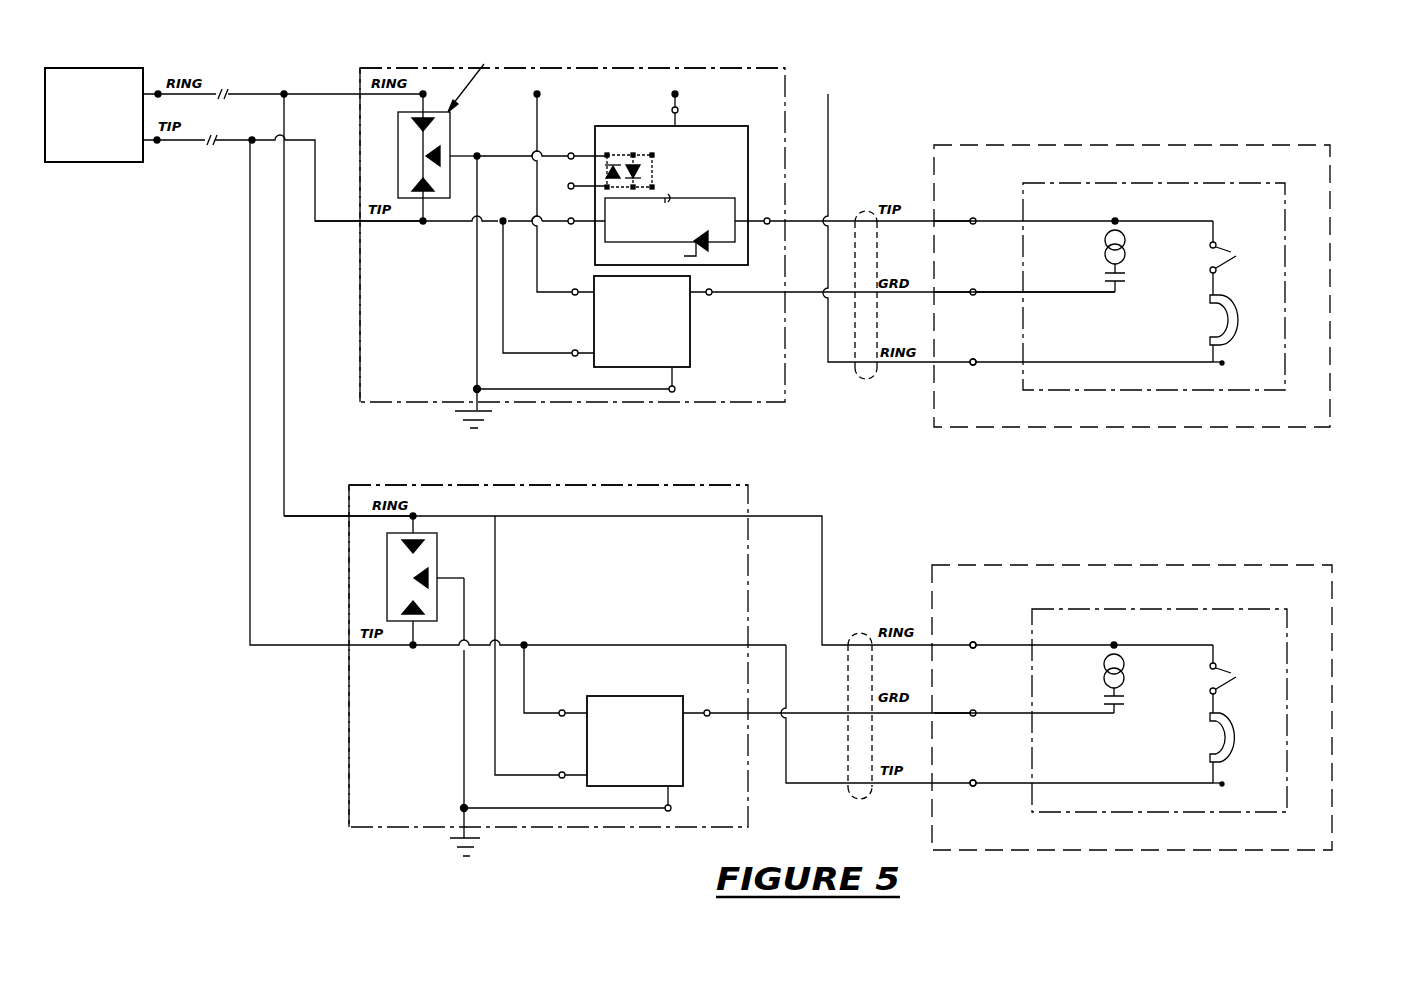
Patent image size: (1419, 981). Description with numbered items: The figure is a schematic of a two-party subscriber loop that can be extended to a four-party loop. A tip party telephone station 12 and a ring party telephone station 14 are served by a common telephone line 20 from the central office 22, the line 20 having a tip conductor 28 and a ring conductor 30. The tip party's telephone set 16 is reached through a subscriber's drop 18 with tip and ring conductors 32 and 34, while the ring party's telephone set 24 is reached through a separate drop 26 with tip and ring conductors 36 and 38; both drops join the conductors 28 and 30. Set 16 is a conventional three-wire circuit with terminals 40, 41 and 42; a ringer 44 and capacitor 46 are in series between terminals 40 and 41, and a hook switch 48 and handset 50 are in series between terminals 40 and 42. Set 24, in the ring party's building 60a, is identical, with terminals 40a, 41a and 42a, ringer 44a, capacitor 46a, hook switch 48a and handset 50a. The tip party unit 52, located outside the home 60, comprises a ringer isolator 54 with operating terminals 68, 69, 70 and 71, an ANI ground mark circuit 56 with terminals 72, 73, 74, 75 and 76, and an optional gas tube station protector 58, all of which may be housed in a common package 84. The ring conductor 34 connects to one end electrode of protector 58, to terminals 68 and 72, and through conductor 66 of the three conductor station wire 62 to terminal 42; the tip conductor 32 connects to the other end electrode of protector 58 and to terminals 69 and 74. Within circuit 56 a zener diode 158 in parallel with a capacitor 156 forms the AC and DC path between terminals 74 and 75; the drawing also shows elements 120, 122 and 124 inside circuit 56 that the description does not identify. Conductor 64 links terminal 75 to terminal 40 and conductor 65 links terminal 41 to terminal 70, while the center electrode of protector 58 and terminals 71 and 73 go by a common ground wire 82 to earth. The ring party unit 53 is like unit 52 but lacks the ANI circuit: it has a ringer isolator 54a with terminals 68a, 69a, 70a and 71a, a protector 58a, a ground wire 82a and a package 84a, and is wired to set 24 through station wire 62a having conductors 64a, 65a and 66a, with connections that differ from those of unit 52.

The tip party telephone station 12 is at (1218, 392).
The ring party telephone station 14 is at (1235, 814).
The telephone set 16 is at (1224, 364).
The subscriber's drop 18 is at (365, 66).
The telephone or transmission line 20 is at (298, 67).
The central office 22 is at (124, 76).
The telephone set 24 is at (1224, 786).
The subscriber's drop 26 is at (293, 483).
The tip conductor 28 is at (234, 143).
The ring conductor 30 is at (282, 92).
The tip conductor 32 is at (342, 222).
The ring conductor 34 is at (311, 94).
The tip conductor 36 is at (300, 648).
The ring conductor 38 is at (328, 518).
The terminal 40 is at (976, 218).
The terminal 40a is at (998, 622).
The terminal 41 is at (977, 289).
The terminal 41a is at (977, 711).
The terminal 42 is at (976, 360).
The terminal 42a is at (976, 780).
The ringer 44 is at (1125, 242).
The ringer 44a is at (1124, 667).
The capacitor 46 is at (1104, 281).
The capacitor 46a is at (1102, 704).
The hook switch 48 is at (1236, 253).
The hook switch 48a is at (1236, 675).
The handset 50 is at (1230, 322).
The handset 50a is at (1228, 730).
The tip party station unit 52 is at (455, 311).
The ring party station unit 53 is at (446, 738).
The ringer isolator 54 is at (692, 348).
The ringer isolator 54a is at (685, 772).
The ANI ground mark station identification circuit 56 is at (750, 144).
The station protector 58 is at (452, 148).
The station protector 58a is at (440, 568).
The tip party's home or building 60 is at (1260, 142).
The ring party's home or building 60a is at (1161, 684).
The three conductor station wire 62 is at (860, 382).
The three conductor station wire 62a is at (860, 800).
The conductor 64 is at (948, 224).
The conductor 64a is at (950, 648).
The conductor 65 is at (952, 295).
The conductor 65a is at (950, 716).
The conductor 66 is at (950, 366).
The conductor 66a is at (950, 787).
The operating terminal 68 is at (576, 288).
The operating terminal 68a is at (563, 709).
The operating terminal 69 is at (575, 357).
The operating terminal 69a is at (560, 780).
The operating terminal 70 is at (712, 294).
The operating terminal 70a is at (708, 710).
The operating terminal 71 is at (676, 388).
The operating terminal 71a is at (672, 810).
The terminal 72 is at (679, 110).
The terminal 73 is at (573, 189).
The terminal 74 is at (574, 225).
The terminal 75 is at (767, 218).
The terminal 76 is at (580, 140).
The common ground wire 82 is at (474, 389).
The common ground wire 82a is at (460, 808).
The common package or container 84 is at (690, 67).
The common package or container 84a is at (706, 484).
The diode bridge of ANI circuit 120 is at (655, 174).
The diode of ANI circuit 122 is at (606, 172).
The diode of ANI circuit 124 is at (654, 168).
The capacitor 156 is at (670, 207).
The zener diode 158 is at (710, 247).